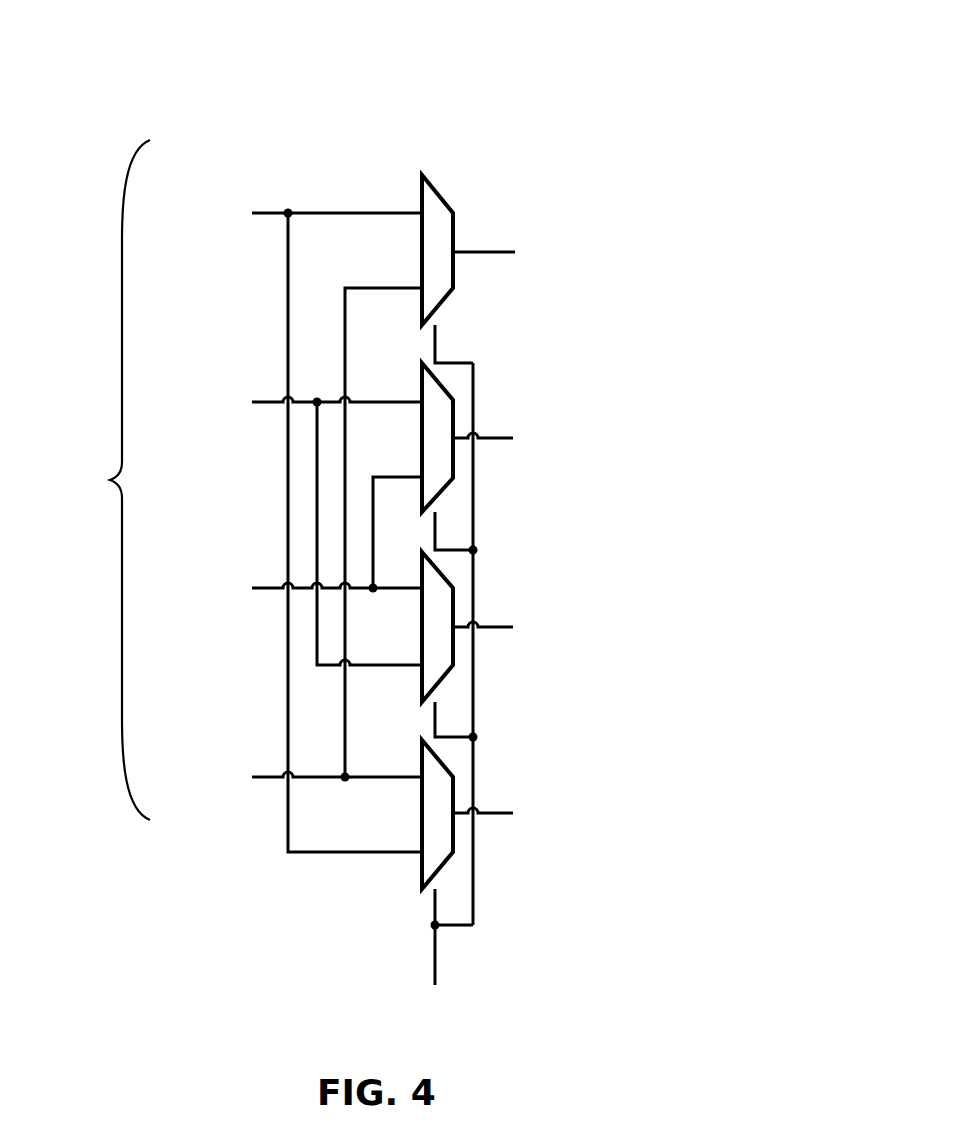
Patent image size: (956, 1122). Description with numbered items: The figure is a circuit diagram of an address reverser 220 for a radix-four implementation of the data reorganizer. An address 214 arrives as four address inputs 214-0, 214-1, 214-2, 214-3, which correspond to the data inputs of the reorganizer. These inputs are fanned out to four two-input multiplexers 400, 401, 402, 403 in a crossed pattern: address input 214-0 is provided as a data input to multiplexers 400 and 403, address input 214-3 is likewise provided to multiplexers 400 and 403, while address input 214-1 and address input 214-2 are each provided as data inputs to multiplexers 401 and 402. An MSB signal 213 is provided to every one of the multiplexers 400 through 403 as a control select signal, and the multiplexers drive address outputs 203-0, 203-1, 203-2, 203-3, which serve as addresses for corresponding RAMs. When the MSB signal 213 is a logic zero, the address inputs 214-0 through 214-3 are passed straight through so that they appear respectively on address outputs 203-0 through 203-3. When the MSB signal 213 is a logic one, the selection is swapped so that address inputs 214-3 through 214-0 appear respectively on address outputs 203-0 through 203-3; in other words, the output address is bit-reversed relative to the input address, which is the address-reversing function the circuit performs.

The address reverser 220 is at (540, 57).
The address 214 is at (92, 480).
The address input 214-0 is at (268, 211).
The address input 214-1 is at (268, 400).
The address input 214-2 is at (268, 586).
The address input 214-3 is at (268, 775).
The multiplexer 400 is at (420, 328).
The multiplexer 401 is at (421, 516).
The multiplexer 402 is at (420, 704).
The multiplexer 403 is at (422, 892).
The address output 203-0 is at (515, 251).
The address output 203-1 is at (513, 438).
The address output 203-2 is at (513, 627).
The address output 203-3 is at (513, 813).
The MSB signal 213 is at (434, 970).